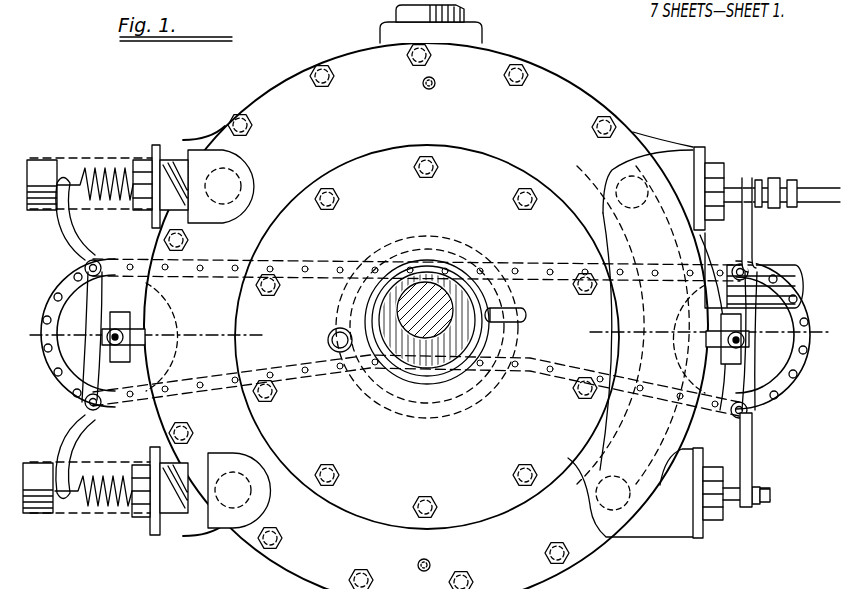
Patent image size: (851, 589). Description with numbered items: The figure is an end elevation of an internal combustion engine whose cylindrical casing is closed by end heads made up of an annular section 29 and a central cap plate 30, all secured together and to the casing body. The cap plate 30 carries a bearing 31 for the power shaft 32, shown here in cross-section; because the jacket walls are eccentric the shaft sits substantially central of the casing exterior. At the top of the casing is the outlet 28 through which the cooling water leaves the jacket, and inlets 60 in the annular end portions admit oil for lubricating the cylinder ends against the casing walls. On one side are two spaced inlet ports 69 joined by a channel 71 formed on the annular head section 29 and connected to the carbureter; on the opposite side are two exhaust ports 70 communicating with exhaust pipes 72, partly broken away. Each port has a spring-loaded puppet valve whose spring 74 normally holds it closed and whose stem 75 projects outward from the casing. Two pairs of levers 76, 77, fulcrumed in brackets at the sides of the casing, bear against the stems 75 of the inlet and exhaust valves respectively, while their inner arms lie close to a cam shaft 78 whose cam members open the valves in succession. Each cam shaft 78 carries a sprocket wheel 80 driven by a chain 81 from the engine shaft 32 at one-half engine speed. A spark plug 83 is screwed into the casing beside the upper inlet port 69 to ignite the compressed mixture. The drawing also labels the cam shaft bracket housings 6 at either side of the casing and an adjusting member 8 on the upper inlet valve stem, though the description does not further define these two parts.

The flange housing 6 is at (30, 312).
The adjusting bolt 8 is at (808, 172).
The outlet 28 is at (386, 17).
The annular section 29 is at (598, 103).
The cap plate 30 is at (485, 514).
The bearing 31 is at (433, 253).
The power shaft 32 is at (413, 307).
The inlet 60 is at (429, 90).
The inlet port 69 is at (650, 192).
The exhaust port 70 is at (208, 178).
The channel 71 is at (672, 432).
The exhaust pipe 72 is at (40, 162).
The spring 74 is at (96, 173).
The valve stem 75 is at (735, 190).
The lever 76 is at (754, 232).
The lever 77 is at (72, 237).
The cam shaft 78 is at (112, 340).
The sprocket wheel 80 is at (425, 341).
The chain 81 is at (305, 258).
The spark plug 83 is at (800, 200).